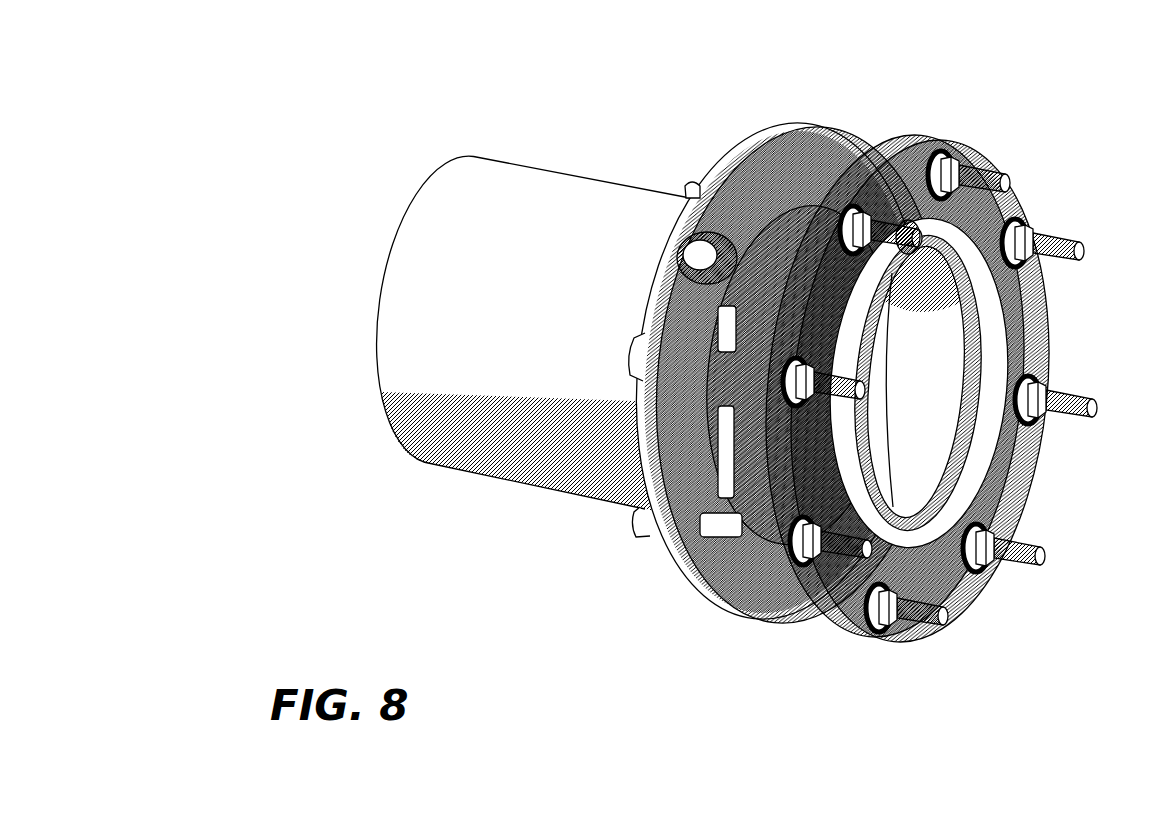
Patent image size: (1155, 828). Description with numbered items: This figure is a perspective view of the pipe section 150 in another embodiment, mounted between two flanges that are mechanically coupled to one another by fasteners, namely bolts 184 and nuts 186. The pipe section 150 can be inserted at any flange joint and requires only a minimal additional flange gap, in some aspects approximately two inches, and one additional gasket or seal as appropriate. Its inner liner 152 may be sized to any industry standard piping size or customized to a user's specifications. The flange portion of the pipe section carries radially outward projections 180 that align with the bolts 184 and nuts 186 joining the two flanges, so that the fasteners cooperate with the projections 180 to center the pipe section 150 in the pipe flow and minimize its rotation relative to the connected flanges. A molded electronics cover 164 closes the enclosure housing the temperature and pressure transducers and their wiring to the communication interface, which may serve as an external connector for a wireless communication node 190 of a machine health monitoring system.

The pipe section 150 is at (957, 600).
The inner liner 152 is at (920, 427).
The molded electronics cover 164 is at (690, 196).
The radially outward projections 180 is at (640, 520).
The bolts 184 is at (691, 190).
The nuts 186 is at (1027, 224).
The wireless communication node 190 is at (678, 237).